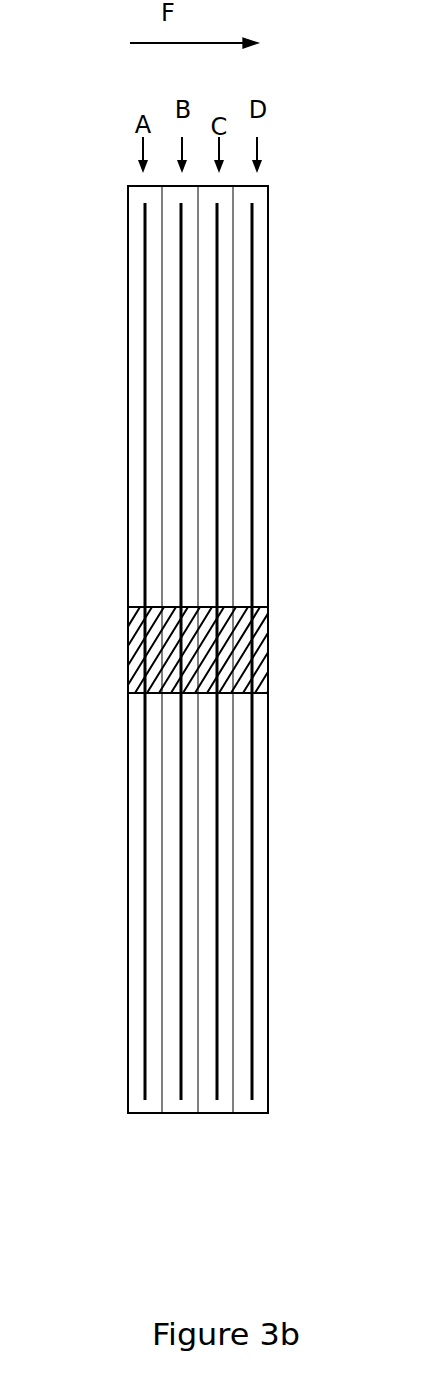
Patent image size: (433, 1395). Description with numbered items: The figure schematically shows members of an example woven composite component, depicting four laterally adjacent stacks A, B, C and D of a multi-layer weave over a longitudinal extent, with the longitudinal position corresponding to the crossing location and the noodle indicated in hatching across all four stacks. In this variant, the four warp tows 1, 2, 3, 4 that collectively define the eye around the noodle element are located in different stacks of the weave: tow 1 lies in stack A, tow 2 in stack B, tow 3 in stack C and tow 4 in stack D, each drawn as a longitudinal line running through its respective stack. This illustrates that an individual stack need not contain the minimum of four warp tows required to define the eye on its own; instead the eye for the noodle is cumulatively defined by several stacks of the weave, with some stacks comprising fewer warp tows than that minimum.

The warp tow 1 is at (142, 233).
The warp tow 2 is at (173, 277).
The warp tow 3 is at (248, 343).
The warp tow 4 is at (218, 404).